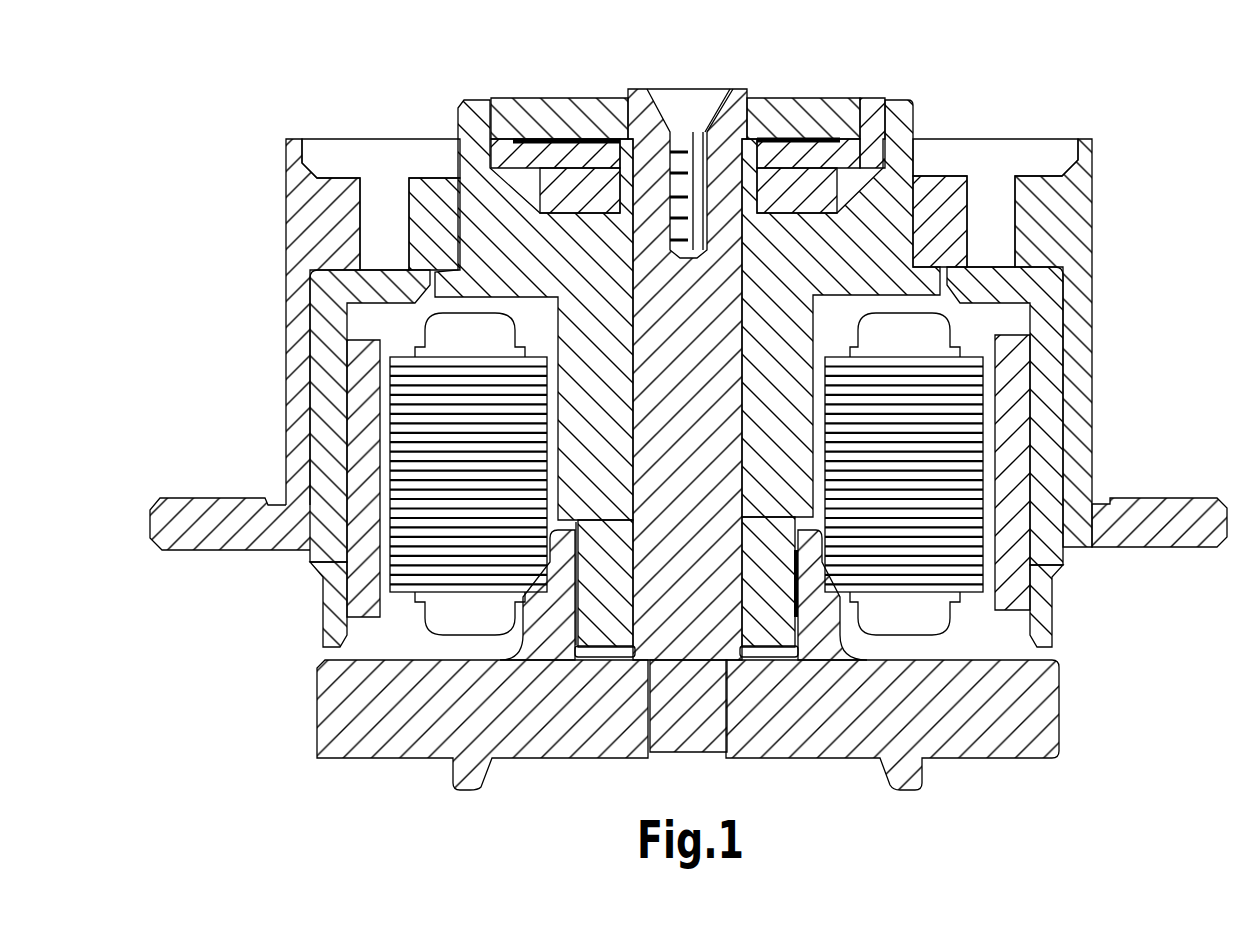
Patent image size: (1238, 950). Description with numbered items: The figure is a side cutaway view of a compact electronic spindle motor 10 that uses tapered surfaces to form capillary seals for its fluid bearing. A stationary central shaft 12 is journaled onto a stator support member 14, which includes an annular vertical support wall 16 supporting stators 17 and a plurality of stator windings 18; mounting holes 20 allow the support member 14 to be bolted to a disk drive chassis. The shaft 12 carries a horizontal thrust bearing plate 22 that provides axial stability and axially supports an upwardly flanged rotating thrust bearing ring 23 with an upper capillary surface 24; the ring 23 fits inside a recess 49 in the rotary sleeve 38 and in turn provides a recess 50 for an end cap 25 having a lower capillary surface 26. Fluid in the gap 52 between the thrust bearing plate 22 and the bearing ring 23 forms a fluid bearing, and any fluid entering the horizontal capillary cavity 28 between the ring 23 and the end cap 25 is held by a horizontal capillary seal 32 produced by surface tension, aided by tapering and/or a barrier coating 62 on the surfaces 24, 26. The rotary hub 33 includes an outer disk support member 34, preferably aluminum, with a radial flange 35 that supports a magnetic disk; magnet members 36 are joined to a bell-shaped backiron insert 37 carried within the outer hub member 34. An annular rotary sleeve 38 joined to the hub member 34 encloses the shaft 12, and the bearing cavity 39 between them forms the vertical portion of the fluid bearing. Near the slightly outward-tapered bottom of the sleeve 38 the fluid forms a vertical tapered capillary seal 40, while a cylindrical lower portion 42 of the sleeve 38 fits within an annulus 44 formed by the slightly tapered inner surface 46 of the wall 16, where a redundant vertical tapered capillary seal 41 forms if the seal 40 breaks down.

The electronic spindle motor 10 is at (1100, 203).
The stationary central shaft 12 is at (683, 720).
The stator support member 14 is at (1050, 705).
The annular vertical support wall 16 is at (835, 615).
The stators 17 is at (987, 432).
The stator windings 18 is at (927, 330).
The mounting holes 20 is at (377, 192).
The horizontal thrust bearing plate 22 is at (830, 195).
The thrust bearing ring 23 is at (510, 100).
The upper capillary surface 24 is at (822, 160).
The end cap 25 is at (612, 100).
The lower capillary surface 26 is at (830, 130).
The horizontal capillary cavity 28 is at (597, 100).
The horizontal capillary seal 32 is at (546, 100).
The rotary hub 33 is at (310, 218).
The outer disk support member 34 is at (295, 332).
The radial flange 35 is at (192, 507).
The magnet members 36 is at (357, 600).
The bell-shaped backiron insert 37 is at (320, 392).
The annular rotary sleeve 38 is at (470, 123).
The bearing cavity 39 is at (633, 483).
The vertical tapered capillary seal 40 is at (623, 653).
The redundant vertical tapered capillary seal 41 is at (577, 548).
The cylindrical lower portion of the sleeve 42 is at (592, 662).
The annulus 44 is at (578, 592).
The inner surface of the vertical wall portion 46 is at (826, 605).
The recess in the rotary sleeve 49 is at (500, 100).
The recess for end cap 50 is at (547, 100).
The gap 52 is at (587, 172).
The barrier coating 62 is at (777, 130).